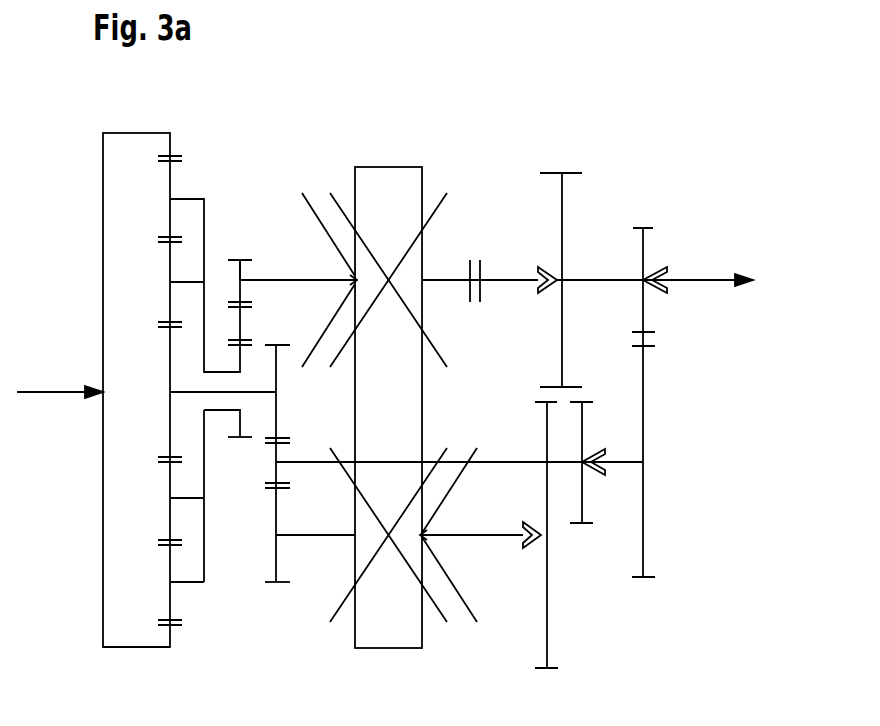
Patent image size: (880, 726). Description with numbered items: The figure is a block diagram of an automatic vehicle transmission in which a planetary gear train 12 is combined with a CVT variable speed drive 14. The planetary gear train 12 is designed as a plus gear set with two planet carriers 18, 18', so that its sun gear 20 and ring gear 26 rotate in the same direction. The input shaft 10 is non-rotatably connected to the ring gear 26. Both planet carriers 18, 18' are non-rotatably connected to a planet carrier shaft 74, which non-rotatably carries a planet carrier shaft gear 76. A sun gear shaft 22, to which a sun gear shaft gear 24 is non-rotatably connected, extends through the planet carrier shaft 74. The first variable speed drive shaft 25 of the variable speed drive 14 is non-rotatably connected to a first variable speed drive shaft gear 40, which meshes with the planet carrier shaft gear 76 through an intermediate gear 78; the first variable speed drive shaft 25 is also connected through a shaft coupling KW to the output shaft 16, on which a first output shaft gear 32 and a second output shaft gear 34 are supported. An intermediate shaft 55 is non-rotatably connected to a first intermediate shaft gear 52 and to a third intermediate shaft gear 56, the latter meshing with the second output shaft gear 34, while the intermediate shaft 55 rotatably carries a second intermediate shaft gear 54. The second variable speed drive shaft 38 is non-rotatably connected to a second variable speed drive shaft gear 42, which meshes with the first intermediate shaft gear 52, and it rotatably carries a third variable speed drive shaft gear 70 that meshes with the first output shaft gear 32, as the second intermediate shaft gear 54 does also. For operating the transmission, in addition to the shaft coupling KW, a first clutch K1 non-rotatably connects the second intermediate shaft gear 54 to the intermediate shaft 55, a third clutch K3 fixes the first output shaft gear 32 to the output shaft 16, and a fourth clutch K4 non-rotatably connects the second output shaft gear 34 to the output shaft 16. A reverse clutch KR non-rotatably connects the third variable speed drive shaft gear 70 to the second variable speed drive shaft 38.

The input shaft 10 is at (48, 396).
The planetary gear train 12 is at (85, 264).
The CVT variable speed drive 14 is at (433, 178).
The output shaft 16 is at (714, 278).
The planet carrier 18 is at (163, 484).
The planet carrier 18' is at (163, 568).
The sun gear 20 is at (170, 348).
The sun gear shaft 22 is at (180, 394).
The sun gear shaft gear 24 is at (283, 345).
The first variable speed drive shaft 25 is at (284, 280).
The ring gear 26 is at (137, 648).
The first output shaft gear 32 is at (578, 173).
The second output shaft gear 34 is at (650, 228).
The second variable speed drive shaft 38 is at (315, 536).
The first variable speed drive shaft gear 40 is at (236, 260).
The second variable speed drive shaft gear 42 is at (285, 585).
The first intermediate shaft gear 52 is at (283, 447).
The second intermediate shaft gear 54 is at (582, 500).
The intermediate shaft 55 is at (498, 462).
The third intermediate shaft gear 56 is at (643, 508).
The third variable speed drive shaft gear 70 is at (547, 638).
The planet carrier shaft 74 is at (237, 411).
The planet carrier shaft gear 76 is at (235, 440).
The intermediate gear 78 is at (240, 322).
The shaft coupling KW is at (480, 267).
The first clutch K1 is at (598, 449).
The third clutch K3 is at (540, 266).
The fourth clutch K4 is at (666, 266).
The reverse clutch KR is at (481, 550).